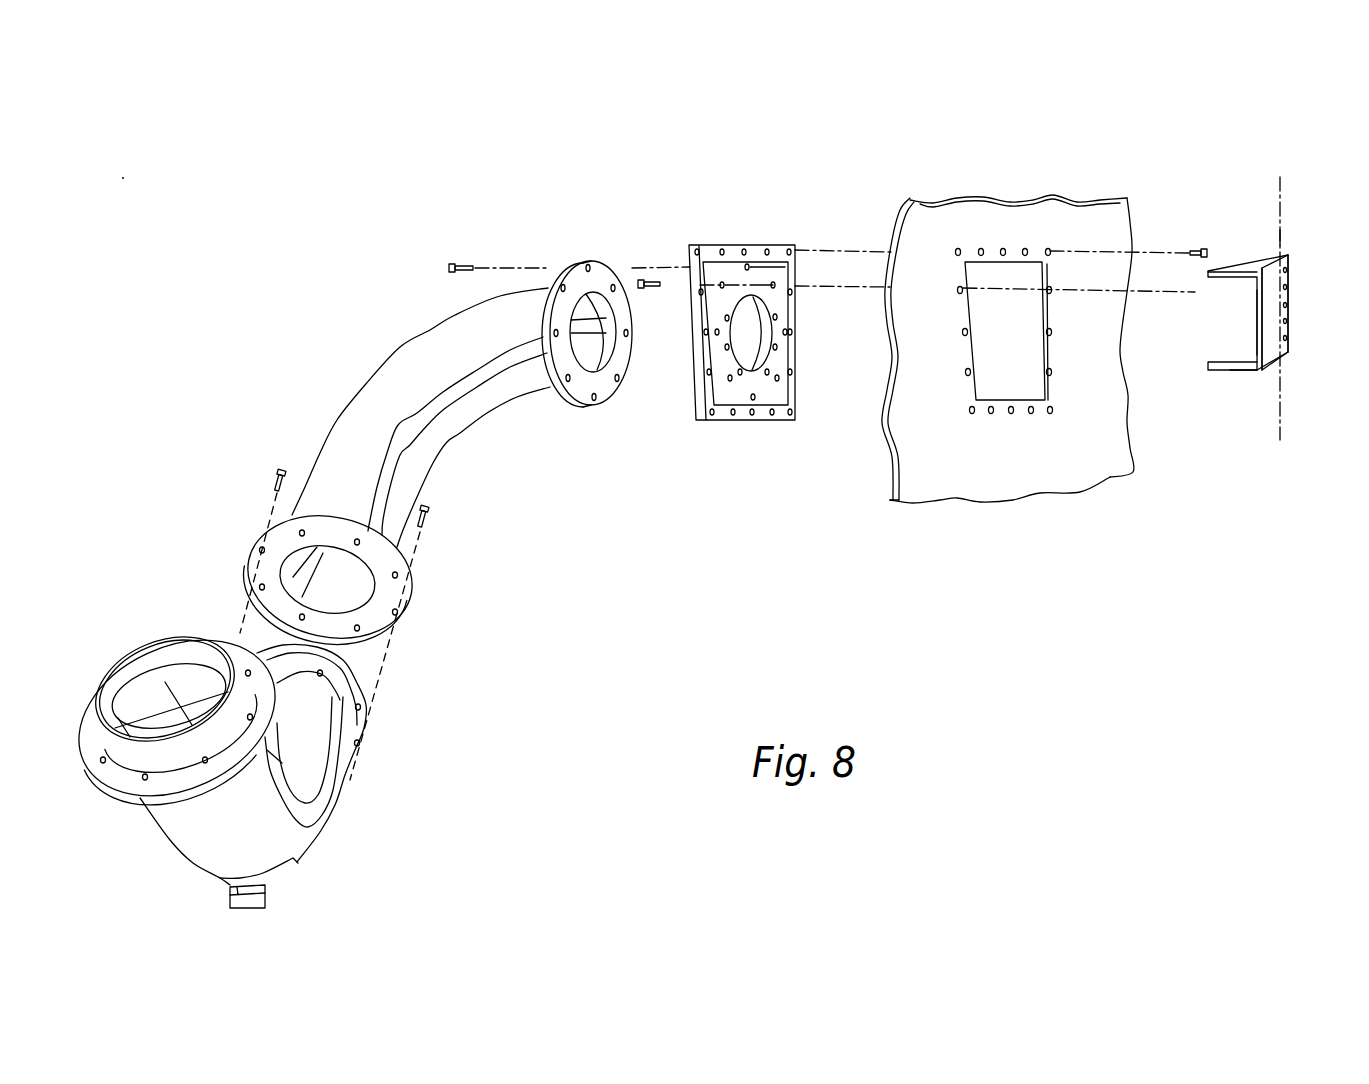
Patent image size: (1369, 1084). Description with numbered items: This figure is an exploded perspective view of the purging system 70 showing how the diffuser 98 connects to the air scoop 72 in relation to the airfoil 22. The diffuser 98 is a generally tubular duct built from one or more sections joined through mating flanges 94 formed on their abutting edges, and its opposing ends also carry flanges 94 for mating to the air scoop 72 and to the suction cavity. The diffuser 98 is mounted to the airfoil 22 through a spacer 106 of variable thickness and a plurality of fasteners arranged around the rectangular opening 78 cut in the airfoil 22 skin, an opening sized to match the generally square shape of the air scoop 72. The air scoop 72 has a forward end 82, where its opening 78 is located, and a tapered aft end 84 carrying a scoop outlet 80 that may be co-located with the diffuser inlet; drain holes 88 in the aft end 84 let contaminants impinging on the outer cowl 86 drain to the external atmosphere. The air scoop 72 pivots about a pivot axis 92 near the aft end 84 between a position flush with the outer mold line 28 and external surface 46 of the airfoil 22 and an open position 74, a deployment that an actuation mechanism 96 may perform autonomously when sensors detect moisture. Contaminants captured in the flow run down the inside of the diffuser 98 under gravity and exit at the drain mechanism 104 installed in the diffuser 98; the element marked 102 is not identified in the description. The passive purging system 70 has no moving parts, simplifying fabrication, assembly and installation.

The purging system 70 is at (240, 258).
The diffuser 98 is at (402, 350).
The flange 94 is at (574, 405).
The spacer 106 is at (740, 421).
The airfoil 22 is at (1010, 186).
The outer mold line 28 is at (912, 507).
The external surface 46 is at (1032, 477).
The air scoop 72 is at (1240, 248).
The open position 74 is at (1248, 312).
The pivot axis 92 is at (1283, 238).
The actuation mechanism 96 is at (1289, 277).
The outer cowl 86 is at (1270, 302).
The drain holes 88 is at (1283, 337).
The aft end 84 is at (1292, 350).
The scoop outlet 80 is at (1228, 307).
The opening 78 is at (1230, 350).
The forward end 82 is at (1240, 370).
The inlet collar 102 is at (157, 660).
The drain mechanism 104 is at (227, 900).